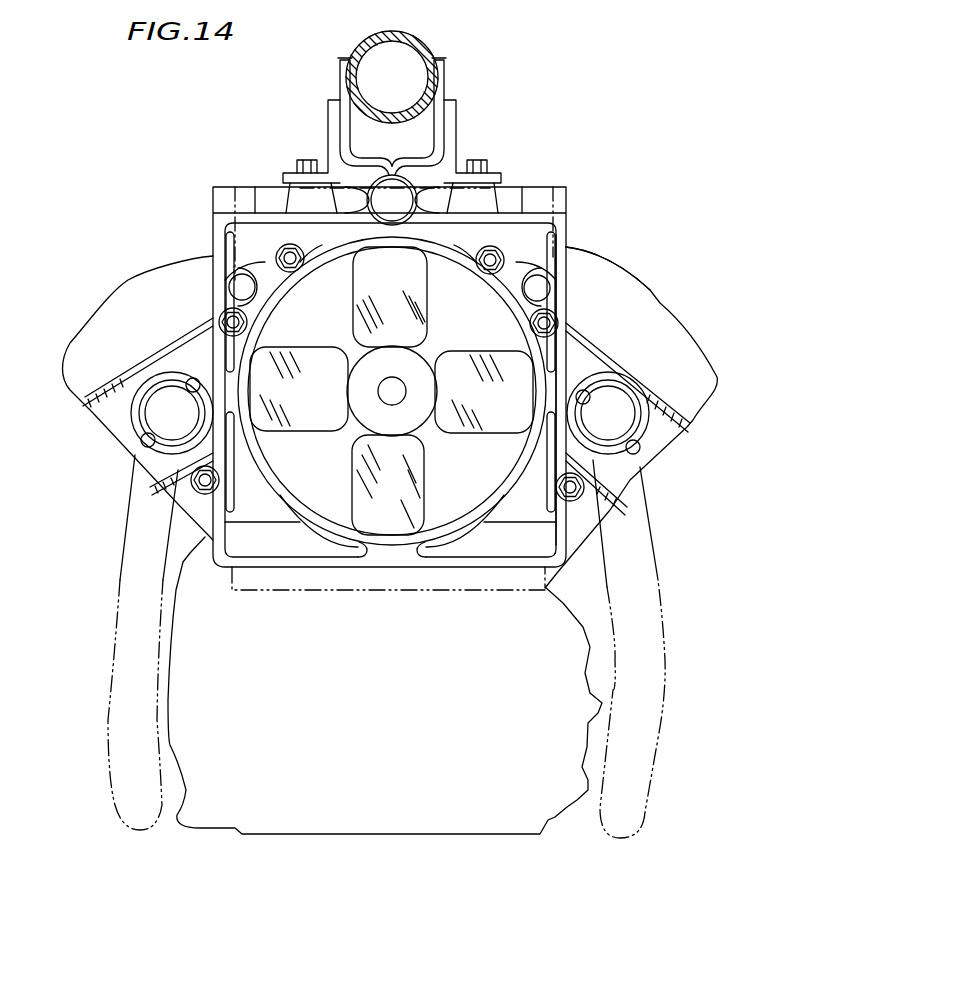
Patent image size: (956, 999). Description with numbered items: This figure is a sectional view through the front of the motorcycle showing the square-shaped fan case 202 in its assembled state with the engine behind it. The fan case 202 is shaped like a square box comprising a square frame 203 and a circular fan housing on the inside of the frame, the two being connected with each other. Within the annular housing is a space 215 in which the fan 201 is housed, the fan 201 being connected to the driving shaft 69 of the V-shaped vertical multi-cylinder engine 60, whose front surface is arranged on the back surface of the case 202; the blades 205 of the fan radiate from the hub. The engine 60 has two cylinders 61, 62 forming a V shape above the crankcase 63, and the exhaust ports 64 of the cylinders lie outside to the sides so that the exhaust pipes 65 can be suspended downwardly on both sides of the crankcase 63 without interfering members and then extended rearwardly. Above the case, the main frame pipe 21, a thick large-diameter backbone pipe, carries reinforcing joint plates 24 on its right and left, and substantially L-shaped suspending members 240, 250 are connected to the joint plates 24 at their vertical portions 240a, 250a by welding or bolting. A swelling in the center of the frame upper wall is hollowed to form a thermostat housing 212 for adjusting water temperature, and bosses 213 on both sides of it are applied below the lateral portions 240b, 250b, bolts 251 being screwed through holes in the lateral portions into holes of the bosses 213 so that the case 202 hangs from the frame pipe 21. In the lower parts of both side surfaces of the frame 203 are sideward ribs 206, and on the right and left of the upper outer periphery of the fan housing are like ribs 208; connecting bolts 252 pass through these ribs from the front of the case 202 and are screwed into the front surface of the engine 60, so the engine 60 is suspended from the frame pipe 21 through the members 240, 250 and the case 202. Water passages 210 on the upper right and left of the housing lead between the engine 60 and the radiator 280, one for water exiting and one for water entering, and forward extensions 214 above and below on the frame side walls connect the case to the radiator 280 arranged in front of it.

The main frame pipe 21 is at (396, 31).
The reinforcing joint plate 24 is at (342, 58).
The V-shaped vertical multi-cylinder engine 60 is at (618, 280).
The cylinder 61 is at (690, 348).
The cylinder 62 is at (140, 288).
The crankcase 63 is at (490, 835).
The exhaust port 64 is at (168, 415).
The exhaust pipe 65 is at (113, 638).
The driving shaft 69 is at (378, 391).
The fan 201 is at (400, 545).
The fan case 202 is at (580, 242).
The square frame 203 is at (567, 367).
The fan blade 205 is at (392, 235).
The rib 206 is at (195, 522).
The rib 208 is at (237, 280).
The water passage 210 is at (227, 312).
The thermostat housing 212 is at (407, 208).
The boss 213 is at (265, 192).
The forward extension 214 is at (450, 505).
The space 215 is at (437, 535).
The suspending member 240 is at (460, 122).
The vertical portion 240a is at (450, 100).
The lateral portion 240b is at (490, 200).
The suspending member 250 is at (326, 115).
The vertical portion 250a is at (341, 105).
The lateral portion 250b is at (303, 200).
The bolt 251 is at (305, 160).
The connecting bolt 252 is at (280, 255).
The radiator 280 is at (297, 595).